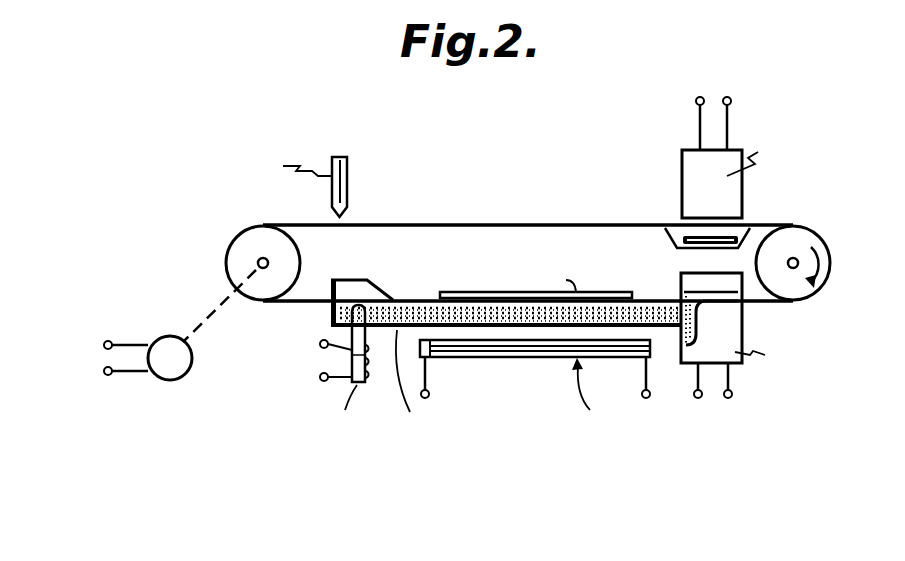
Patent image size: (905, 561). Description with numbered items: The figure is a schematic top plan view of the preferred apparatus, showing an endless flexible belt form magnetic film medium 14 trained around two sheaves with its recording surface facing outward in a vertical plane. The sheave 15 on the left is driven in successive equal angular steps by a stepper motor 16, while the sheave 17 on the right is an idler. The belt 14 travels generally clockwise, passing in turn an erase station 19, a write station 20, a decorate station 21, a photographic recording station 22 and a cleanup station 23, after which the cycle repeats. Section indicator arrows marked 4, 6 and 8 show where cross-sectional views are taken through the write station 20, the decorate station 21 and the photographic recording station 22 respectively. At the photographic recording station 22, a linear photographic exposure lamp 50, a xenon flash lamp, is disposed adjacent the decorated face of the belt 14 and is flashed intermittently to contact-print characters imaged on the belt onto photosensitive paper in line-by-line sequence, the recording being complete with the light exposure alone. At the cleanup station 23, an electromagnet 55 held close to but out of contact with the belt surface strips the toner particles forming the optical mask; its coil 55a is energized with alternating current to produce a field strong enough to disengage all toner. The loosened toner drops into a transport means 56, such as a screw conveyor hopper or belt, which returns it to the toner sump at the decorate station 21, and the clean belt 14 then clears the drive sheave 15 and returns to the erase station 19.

The section line 4- 4 is at (655, 222).
The section line 6- 6 is at (738, 420).
The section line 8- 8 is at (641, 388).
The endless flexible belt form magnetic film medium 14 is at (425, 225).
The sheave 15 is at (245, 246).
The stepper motor 16 is at (173, 370).
The sheave 17 is at (818, 243).
The erase station 19 is at (357, 178).
The write station 20 is at (752, 182).
The decorate station 21 is at (762, 320).
The photographic recording station 22 is at (665, 477).
The cleanup station 23 is at (336, 504).
The linear photographic exposure lamp 50 is at (523, 357).
The electromagnet 55 is at (340, 314).
The coil 55a is at (351, 356).
The transport means 56 is at (436, 296).